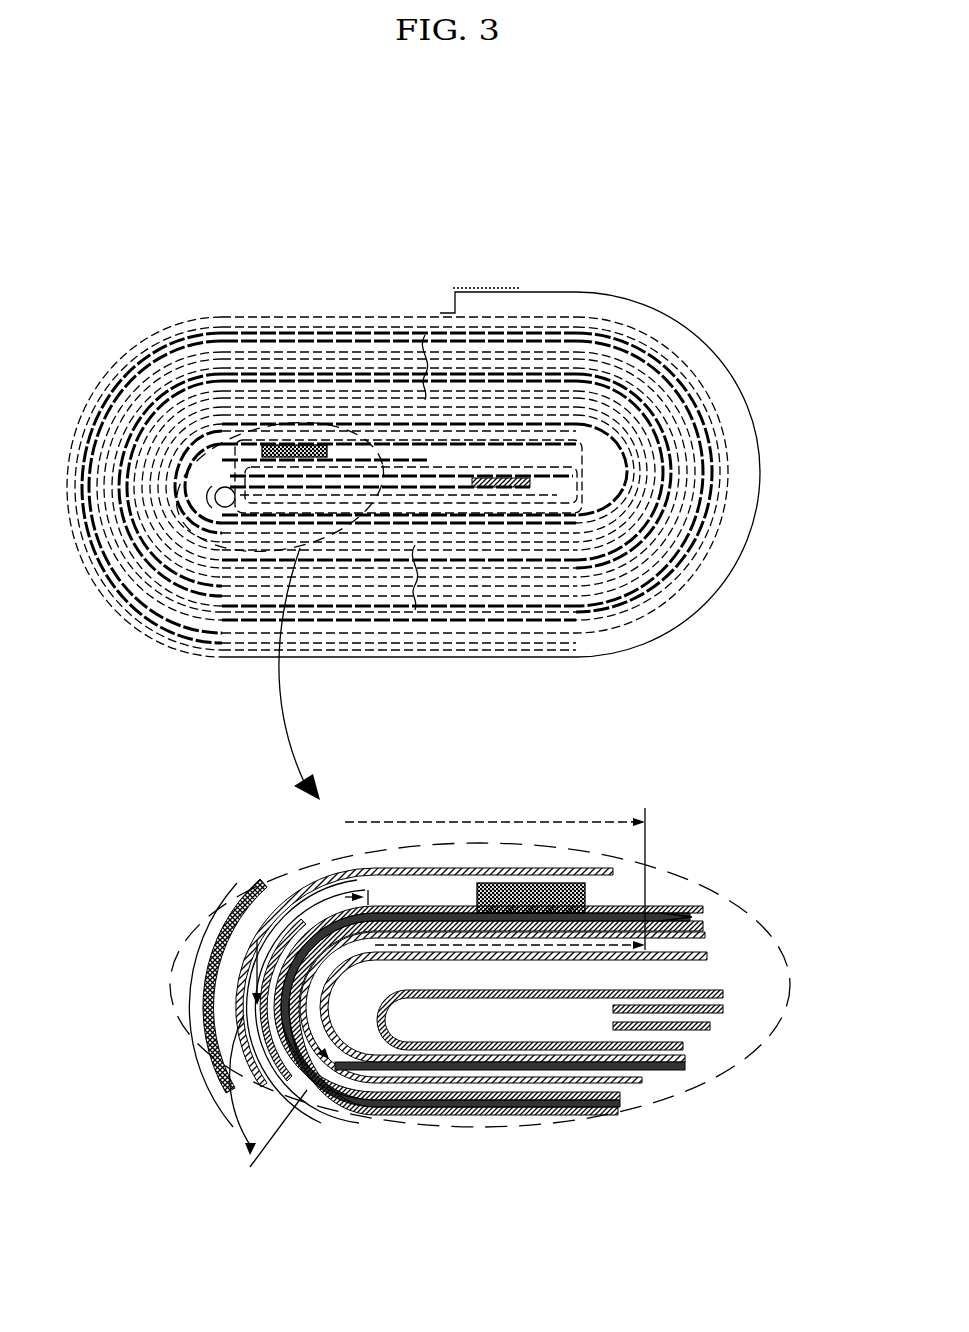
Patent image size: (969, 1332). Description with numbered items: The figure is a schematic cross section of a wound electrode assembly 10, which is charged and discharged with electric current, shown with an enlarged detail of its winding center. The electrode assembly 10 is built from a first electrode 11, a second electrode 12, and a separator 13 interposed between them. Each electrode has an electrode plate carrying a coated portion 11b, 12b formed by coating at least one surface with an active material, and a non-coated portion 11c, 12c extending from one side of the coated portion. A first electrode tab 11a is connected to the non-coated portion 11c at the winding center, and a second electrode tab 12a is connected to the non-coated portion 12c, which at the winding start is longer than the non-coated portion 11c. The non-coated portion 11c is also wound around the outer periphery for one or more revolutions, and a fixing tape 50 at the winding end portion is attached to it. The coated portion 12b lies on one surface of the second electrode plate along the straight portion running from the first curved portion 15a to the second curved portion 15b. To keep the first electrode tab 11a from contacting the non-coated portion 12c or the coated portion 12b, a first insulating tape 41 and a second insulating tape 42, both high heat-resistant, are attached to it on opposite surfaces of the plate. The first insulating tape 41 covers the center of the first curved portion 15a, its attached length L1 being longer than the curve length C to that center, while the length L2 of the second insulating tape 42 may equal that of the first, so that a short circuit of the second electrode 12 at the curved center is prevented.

The electrode assembly 10 is at (432, 161).
The first electrode 11 is at (432, 449).
The first electrode tab 11a is at (270, 442).
The coated portion 11b is at (354, 538).
The non-coated portion 11c is at (296, 446).
The second electrode 12 is at (542, 458).
The second electrode tab 12a is at (540, 489).
The coated portion 12b is at (426, 520).
The non-coated portion 12c is at (552, 474).
The separator 13 is at (312, 327).
The first curved portion 15a is at (137, 343).
The second curved portion 15b is at (612, 428).
The first insulating tape 41 is at (204, 428).
The second insulating tape 42 is at (233, 508).
The fixing tape 50 is at (425, 312).
The length of the attached first insulating tape L1 is at (495, 869).
The length of the attached second insulating tape L2 is at (342, 958).
The curve length C is at (275, 945).